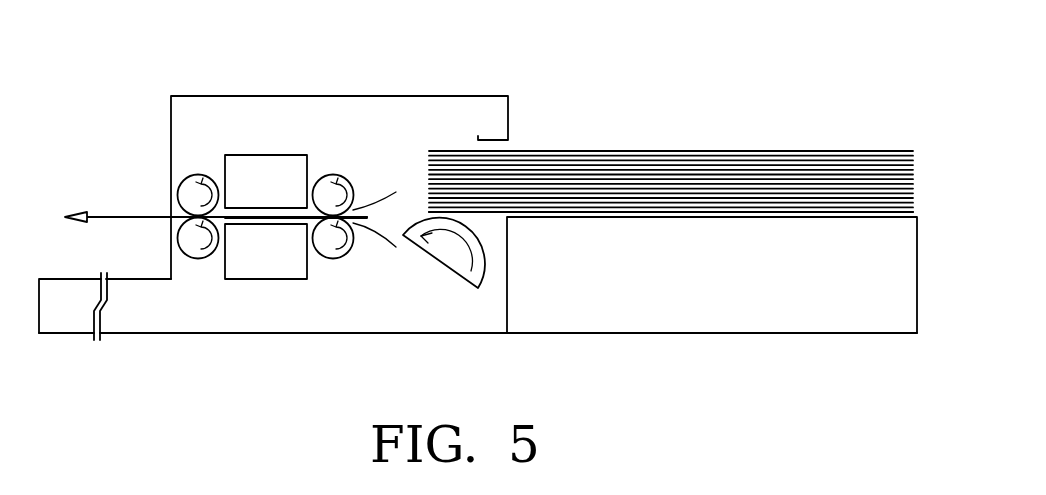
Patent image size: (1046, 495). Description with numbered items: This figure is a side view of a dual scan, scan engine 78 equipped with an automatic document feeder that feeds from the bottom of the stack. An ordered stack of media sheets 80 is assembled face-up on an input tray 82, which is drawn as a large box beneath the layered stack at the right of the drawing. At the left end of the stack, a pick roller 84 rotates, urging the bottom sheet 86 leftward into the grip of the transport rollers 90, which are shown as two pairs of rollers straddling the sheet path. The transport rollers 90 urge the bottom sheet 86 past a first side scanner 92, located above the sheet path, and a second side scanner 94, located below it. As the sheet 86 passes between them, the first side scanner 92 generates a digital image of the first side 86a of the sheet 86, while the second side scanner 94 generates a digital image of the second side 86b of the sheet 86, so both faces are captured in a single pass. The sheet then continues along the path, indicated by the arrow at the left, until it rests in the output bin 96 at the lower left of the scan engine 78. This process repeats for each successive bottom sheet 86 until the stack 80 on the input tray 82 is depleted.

The scan engine 78 is at (91, 94).
The stack of media sheets 80 is at (739, 151).
The input tray 82 is at (665, 322).
The pick roller 84 is at (462, 268).
The bottom sheet 86 is at (490, 214).
The first side 86a is at (257, 243).
The second side 86b is at (296, 237).
The transport rollers 90 is at (174, 199).
The first side scanner 92 is at (283, 158).
The second side scanner 94 is at (282, 273).
The output bin 96 is at (68, 285).